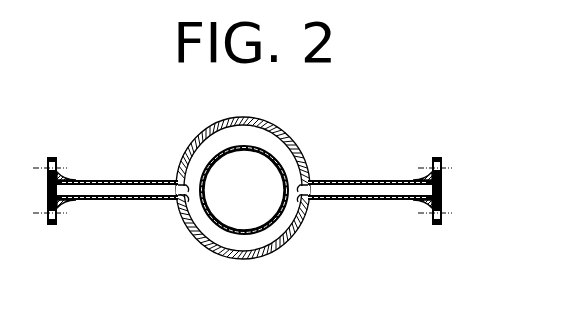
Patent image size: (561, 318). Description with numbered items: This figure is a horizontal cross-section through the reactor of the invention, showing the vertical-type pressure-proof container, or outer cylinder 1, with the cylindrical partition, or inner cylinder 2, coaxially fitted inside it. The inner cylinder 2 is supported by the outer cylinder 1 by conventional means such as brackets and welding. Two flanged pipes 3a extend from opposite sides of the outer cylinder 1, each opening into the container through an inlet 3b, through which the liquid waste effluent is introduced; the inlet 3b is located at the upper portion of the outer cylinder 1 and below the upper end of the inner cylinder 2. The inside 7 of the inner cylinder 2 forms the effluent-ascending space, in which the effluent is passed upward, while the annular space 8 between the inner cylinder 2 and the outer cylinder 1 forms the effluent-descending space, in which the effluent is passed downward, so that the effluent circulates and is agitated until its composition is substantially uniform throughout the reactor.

The pressure-proof container (outer cylinder) 1 is at (275, 132).
The cylindrical partition (inner cylinder) 2 is at (278, 166).
The pipe 3a is at (122, 189).
The inlet 3b is at (182, 203).
The effluent-ascending space 7 is at (250, 227).
The effluent-descending space 8 is at (284, 225).